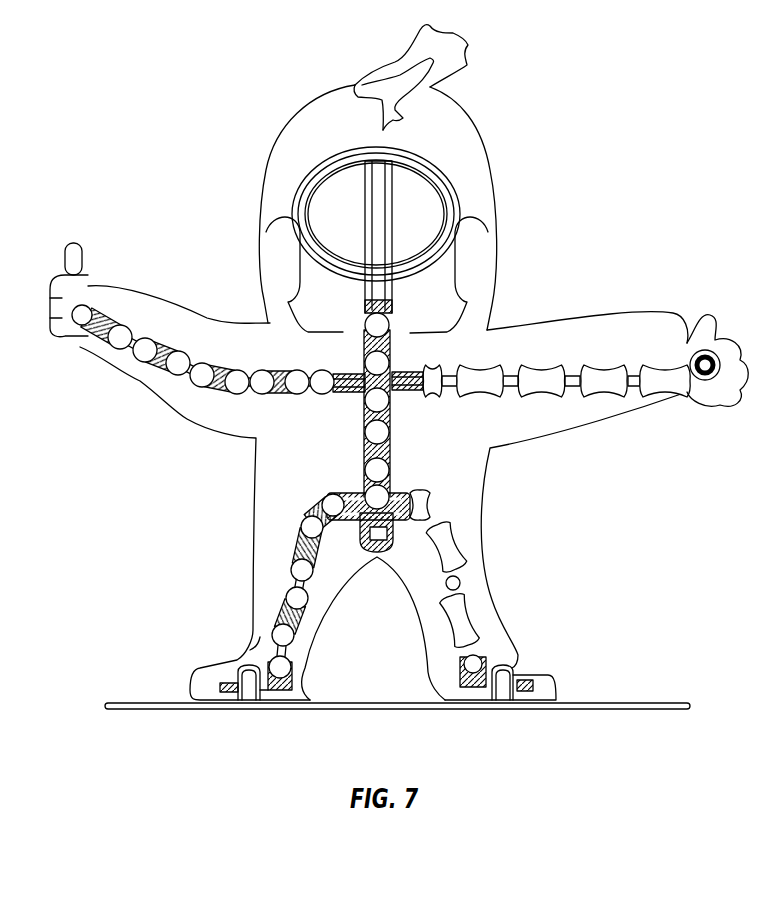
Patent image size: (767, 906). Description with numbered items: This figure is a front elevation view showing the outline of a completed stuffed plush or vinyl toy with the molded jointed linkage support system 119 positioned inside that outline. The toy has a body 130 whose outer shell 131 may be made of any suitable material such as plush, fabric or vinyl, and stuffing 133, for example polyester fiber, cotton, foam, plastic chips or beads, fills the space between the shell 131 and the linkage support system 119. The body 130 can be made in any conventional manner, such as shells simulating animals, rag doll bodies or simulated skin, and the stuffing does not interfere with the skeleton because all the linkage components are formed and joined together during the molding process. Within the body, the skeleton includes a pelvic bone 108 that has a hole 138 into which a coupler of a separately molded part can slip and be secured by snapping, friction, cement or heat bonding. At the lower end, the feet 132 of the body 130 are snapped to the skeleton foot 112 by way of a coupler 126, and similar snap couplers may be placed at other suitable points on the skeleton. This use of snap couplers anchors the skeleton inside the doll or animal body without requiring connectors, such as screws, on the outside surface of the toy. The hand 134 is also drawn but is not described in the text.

The stuffing 133 is at (288, 132).
The body 130 is at (481, 211).
The shell 131 is at (509, 326).
The hand 134 is at (711, 414).
The jointed linkage support system 119 is at (165, 327).
The pelvic bone 108 is at (346, 531).
The hole 138 is at (377, 555).
The coupler 126 is at (508, 660).
The skeleton foot 112 is at (520, 680).
The feet 132 is at (545, 677).